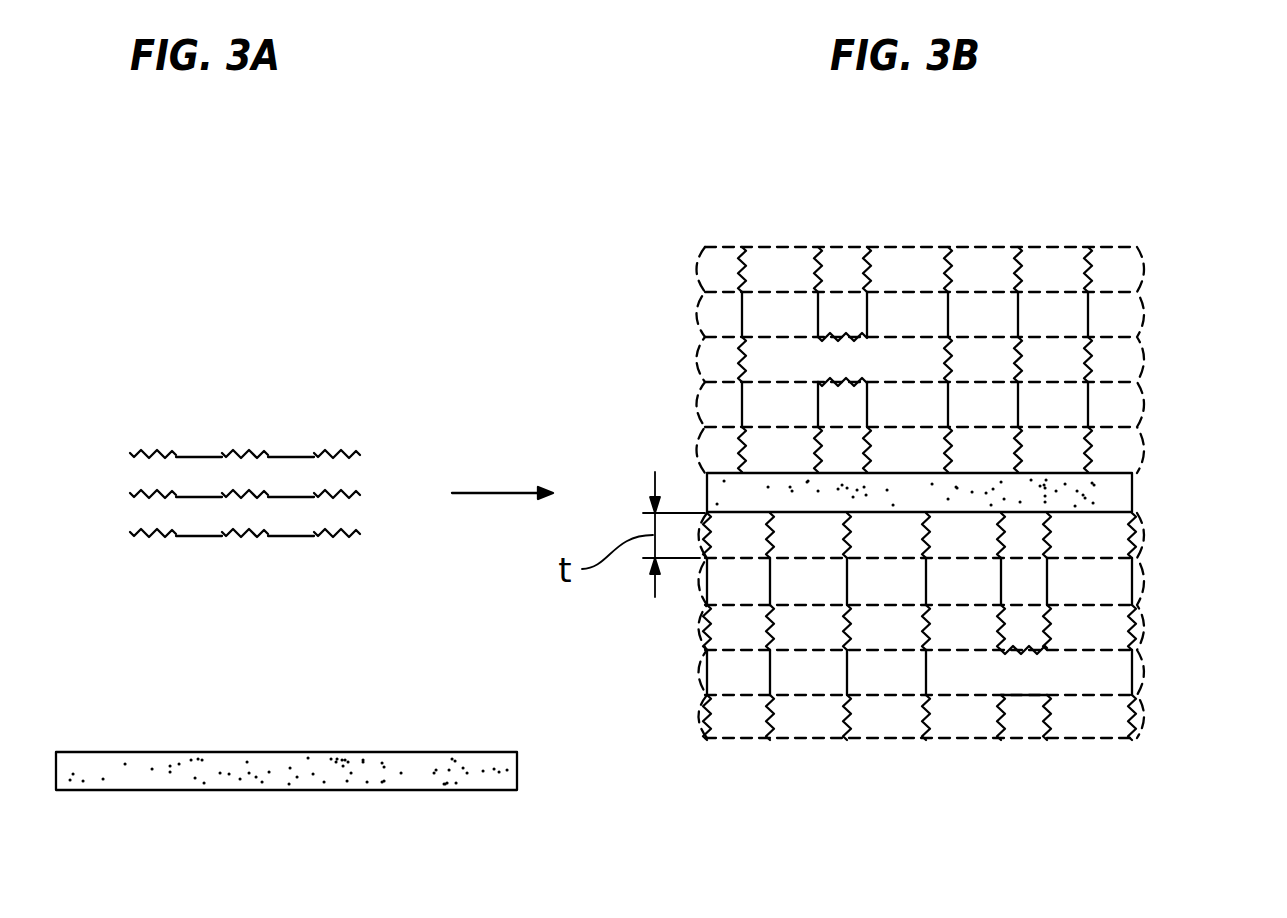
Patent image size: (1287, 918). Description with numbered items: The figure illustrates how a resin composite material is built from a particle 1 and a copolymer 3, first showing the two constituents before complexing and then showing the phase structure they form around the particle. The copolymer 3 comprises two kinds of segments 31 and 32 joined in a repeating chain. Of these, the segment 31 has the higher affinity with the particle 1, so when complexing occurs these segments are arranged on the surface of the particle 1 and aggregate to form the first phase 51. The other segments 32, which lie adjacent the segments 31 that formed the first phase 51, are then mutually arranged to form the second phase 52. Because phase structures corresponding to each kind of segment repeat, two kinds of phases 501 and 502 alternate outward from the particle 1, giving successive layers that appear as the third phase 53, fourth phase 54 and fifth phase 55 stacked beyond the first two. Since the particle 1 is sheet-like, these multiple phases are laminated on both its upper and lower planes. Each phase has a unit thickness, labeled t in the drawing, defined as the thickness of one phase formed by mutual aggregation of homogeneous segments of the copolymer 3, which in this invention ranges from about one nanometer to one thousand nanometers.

In FIG. 3A, the particle 1 is at (170, 790).
In FIG. 3B, the particle 1 is at (1135, 492).
In FIG. 3A, the copolymer 3 is at (343, 322).
In FIG. 3B, the copolymer 3 is at (550, 248).
In FIG. 3A, the segment 31 is at (145, 450).
In FIG. 3B, the segment 31 is at (742, 258).
In FIG. 3A, the segment 32 is at (200, 453).
In FIG. 3B, the segment 32 is at (742, 315).
In FIG. 3B, the first phase 51 is at (1150, 448).
In FIG. 3B, the second phase 52 is at (1150, 403).
In FIG. 3B, the third phase 53 is at (1150, 358).
In FIG. 3B, the fourth phase 54 is at (1150, 313).
In FIG. 3B, the fifth phase 55 is at (1150, 268).
In FIG. 3B, the phase 501 is at (728, 540).
In FIG. 3B, the phase 502 is at (728, 582).